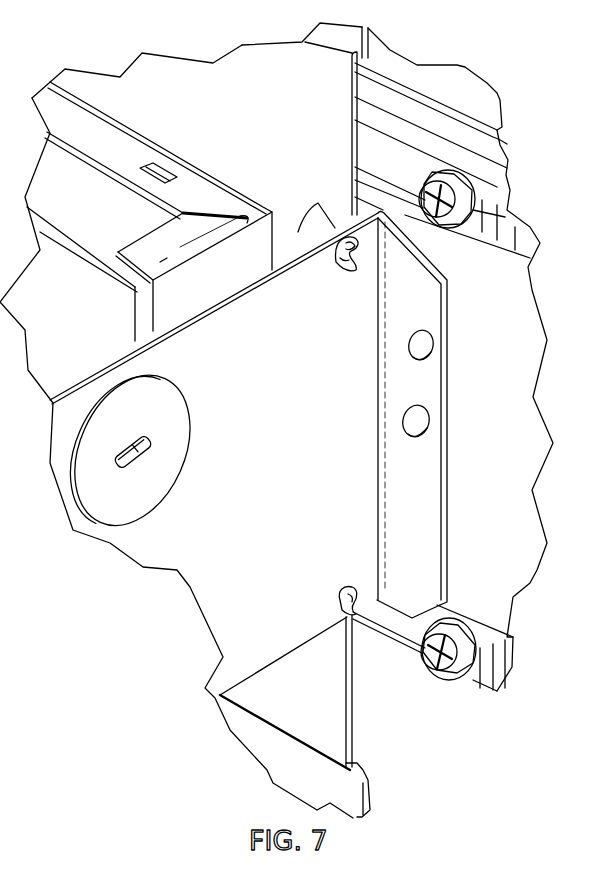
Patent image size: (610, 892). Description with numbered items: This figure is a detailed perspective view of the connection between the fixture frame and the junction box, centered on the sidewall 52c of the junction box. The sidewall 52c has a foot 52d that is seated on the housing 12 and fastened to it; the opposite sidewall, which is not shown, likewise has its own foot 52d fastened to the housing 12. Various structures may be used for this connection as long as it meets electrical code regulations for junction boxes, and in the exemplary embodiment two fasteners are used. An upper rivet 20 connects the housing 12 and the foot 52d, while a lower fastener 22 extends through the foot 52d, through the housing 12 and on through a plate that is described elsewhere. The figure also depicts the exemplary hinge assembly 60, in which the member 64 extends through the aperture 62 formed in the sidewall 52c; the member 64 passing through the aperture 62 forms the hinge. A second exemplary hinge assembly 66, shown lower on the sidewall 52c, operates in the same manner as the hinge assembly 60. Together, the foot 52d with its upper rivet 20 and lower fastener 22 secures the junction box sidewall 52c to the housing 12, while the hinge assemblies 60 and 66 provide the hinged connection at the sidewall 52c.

The housing 12 is at (525, 444).
The upper rivet 20 is at (420, 346).
The lower fastener 22 is at (425, 406).
The sidewall 52c is at (316, 461).
The foot 52d is at (434, 507).
The hinge assembly 60 is at (338, 272).
The aperture 62 is at (337, 252).
The member 64 is at (344, 266).
The hinge assembly 66 is at (327, 593).